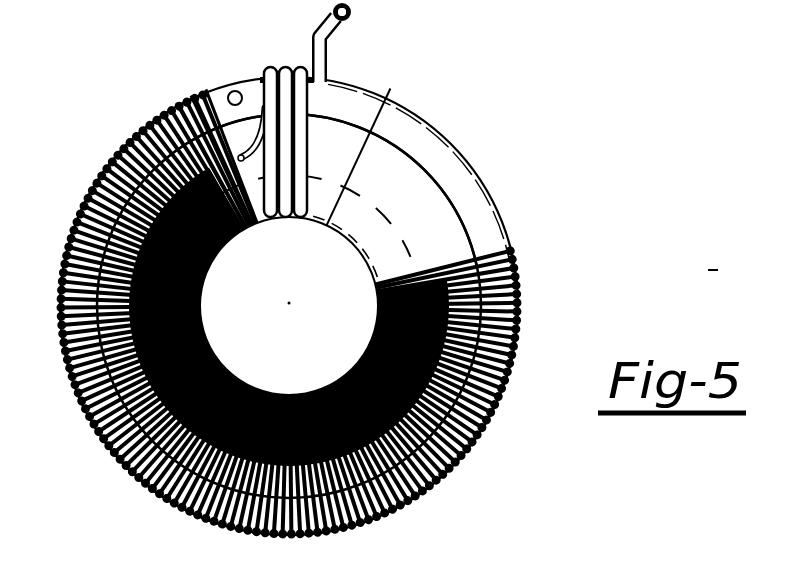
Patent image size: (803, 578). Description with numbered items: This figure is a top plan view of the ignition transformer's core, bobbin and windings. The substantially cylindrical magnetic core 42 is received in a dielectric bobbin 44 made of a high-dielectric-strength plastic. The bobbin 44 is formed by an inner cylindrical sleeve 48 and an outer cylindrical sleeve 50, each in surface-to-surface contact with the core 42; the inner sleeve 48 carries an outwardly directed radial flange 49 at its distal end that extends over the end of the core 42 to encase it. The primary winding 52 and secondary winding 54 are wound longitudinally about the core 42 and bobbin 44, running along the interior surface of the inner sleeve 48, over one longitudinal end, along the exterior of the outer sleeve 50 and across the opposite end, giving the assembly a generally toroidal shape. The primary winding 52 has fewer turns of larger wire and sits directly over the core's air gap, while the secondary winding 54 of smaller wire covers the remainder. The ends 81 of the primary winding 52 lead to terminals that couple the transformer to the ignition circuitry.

The magnetic core 42 is at (418, 252).
The dielectric bobbin 44 is at (356, 70).
The inner cylindrical sleeve 48 is at (373, 235).
The outwardly directed radial flange 49 is at (420, 232).
The outer cylindrical sleeve 50 is at (493, 247).
The primary winding 52 is at (279, 66).
The secondary winding 54 is at (518, 312).
The ends of the primary winding 81 is at (350, 13).